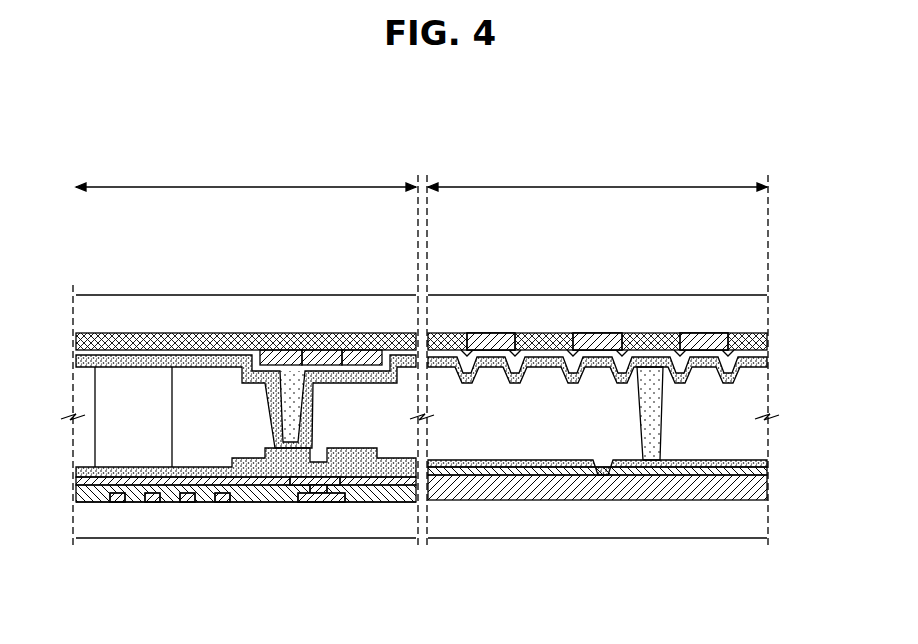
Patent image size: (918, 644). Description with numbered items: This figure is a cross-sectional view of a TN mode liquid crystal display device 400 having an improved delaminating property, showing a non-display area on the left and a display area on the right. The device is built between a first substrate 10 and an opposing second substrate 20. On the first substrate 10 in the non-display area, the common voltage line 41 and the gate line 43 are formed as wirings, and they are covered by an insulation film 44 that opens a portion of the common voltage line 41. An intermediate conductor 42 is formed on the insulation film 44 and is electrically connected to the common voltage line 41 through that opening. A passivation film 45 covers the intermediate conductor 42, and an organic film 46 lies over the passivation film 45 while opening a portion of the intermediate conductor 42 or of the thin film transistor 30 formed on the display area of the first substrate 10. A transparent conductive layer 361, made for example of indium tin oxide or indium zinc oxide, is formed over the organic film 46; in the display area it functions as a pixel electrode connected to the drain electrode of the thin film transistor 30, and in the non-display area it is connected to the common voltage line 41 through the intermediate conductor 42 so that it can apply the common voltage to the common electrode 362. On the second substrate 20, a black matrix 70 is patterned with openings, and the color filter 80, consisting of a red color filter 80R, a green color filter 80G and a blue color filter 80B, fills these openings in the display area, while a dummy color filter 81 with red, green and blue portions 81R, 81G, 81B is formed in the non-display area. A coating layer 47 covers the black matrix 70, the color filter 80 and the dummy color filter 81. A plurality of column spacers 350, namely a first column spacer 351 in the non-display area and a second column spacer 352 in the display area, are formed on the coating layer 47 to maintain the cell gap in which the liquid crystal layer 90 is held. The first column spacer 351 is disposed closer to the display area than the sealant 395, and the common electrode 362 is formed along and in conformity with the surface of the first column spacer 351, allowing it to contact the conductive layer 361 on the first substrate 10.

The display device 400 is at (537, 101).
The first substrate 10 is at (78, 521).
The second substrate 20 is at (78, 314).
The thin film transistor 30 is at (690, 500).
The common voltage line 41 is at (320, 502).
The intermediate conductor 42 is at (294, 502).
The gate line 43 is at (187, 502).
The insulation film 44 is at (78, 494).
The passivation film 45 is at (78, 481).
The organic film 46 is at (78, 470).
The coating layer 47 is at (78, 358).
The black matrix 70 is at (78, 341).
The color filter 80 is at (597, 282).
The red color filter 80R is at (494, 334).
The green color filter 80G is at (596, 334).
The blue color filter 80B is at (701, 334).
The dummy color filter 81 is at (321, 286).
The red dummy color filter 81R is at (279, 350).
The green dummy color filter 81G is at (319, 350).
The blue dummy color filter 81B is at (365, 350).
The liquid crystal layer 90 is at (767, 433).
The column spacers 350 is at (471, 495).
The first column spacer 351 is at (295, 405).
The second column spacer 352 is at (635, 474).
The conductive layer 361 is at (767, 464).
The common electrode 362 is at (767, 360).
The sealant 395 is at (100, 402).